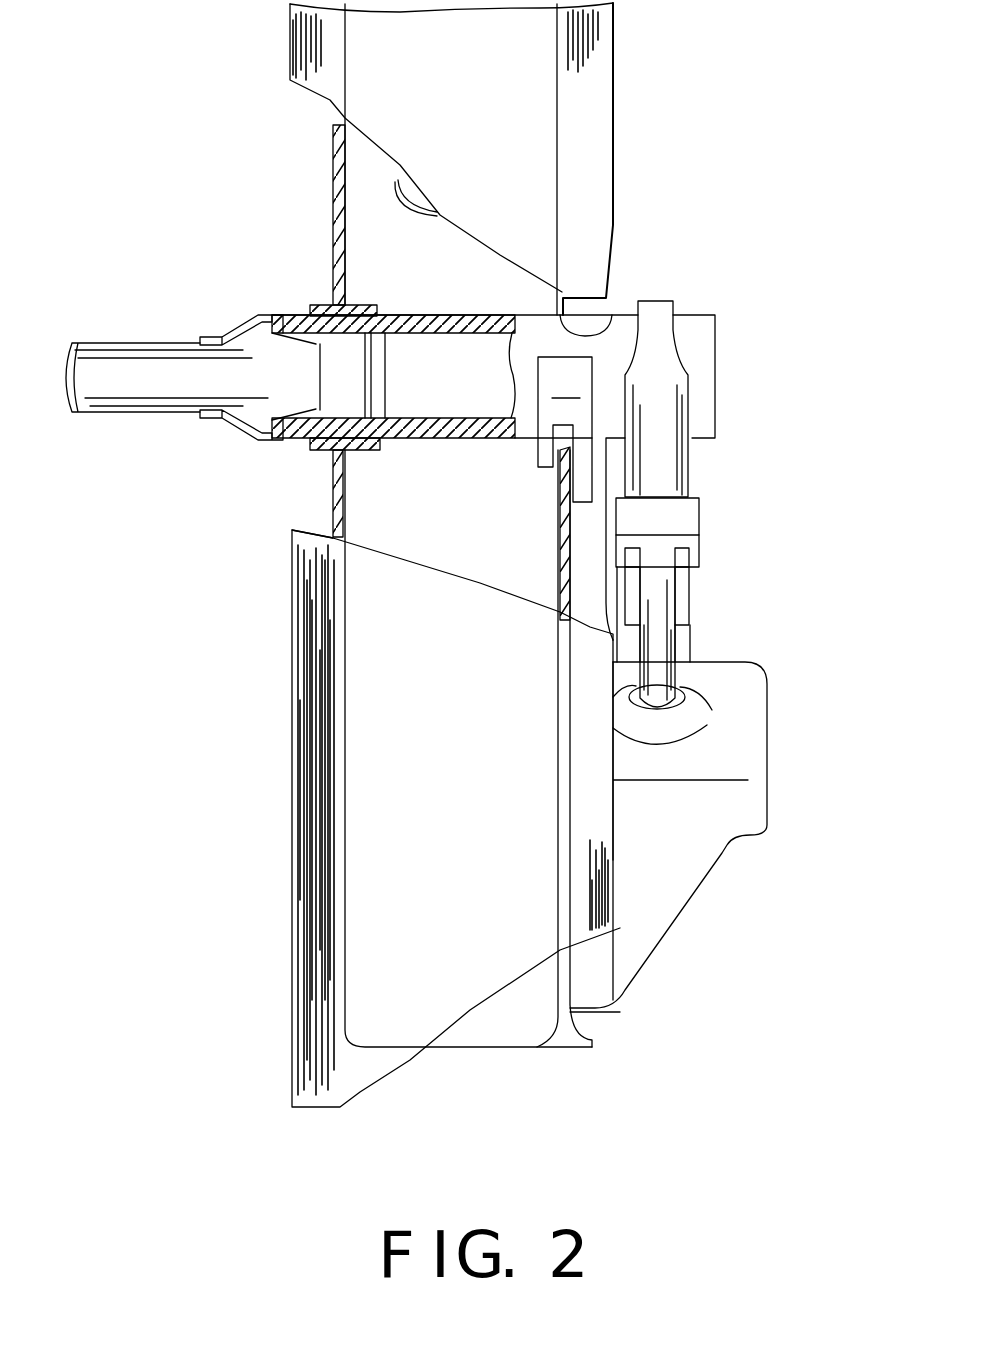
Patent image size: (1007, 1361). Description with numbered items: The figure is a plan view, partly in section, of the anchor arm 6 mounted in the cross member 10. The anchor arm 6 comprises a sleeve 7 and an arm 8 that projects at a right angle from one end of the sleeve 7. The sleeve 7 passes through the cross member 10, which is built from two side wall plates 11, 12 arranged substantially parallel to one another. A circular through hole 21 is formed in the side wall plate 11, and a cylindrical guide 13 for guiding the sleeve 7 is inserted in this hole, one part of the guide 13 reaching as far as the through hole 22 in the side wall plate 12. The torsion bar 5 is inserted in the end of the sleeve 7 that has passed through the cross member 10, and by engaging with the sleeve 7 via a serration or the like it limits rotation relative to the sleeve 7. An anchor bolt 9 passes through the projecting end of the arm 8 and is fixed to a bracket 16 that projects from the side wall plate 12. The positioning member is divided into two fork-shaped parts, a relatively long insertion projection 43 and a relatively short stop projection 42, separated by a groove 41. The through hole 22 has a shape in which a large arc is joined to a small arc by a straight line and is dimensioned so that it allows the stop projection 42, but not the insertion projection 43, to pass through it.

The torsion bar 5 is at (130, 341).
The anchor arm 6 is at (699, 314).
The sleeve 7 is at (258, 322).
The arm 8 is at (692, 478).
The anchor bolt 9 is at (680, 641).
The cross member 10 is at (510, 1020).
The side wall plate 11 is at (332, 245).
The side wall plate 12 is at (565, 300).
The cylindrical guide 13 is at (312, 452).
The bracket 16 is at (770, 757).
The circular through hole 21 is at (350, 447).
The through hole 22 is at (605, 333).
The groove 41 is at (565, 426).
The stop projection 42 is at (540, 457).
The insertion projection 43 is at (617, 504).